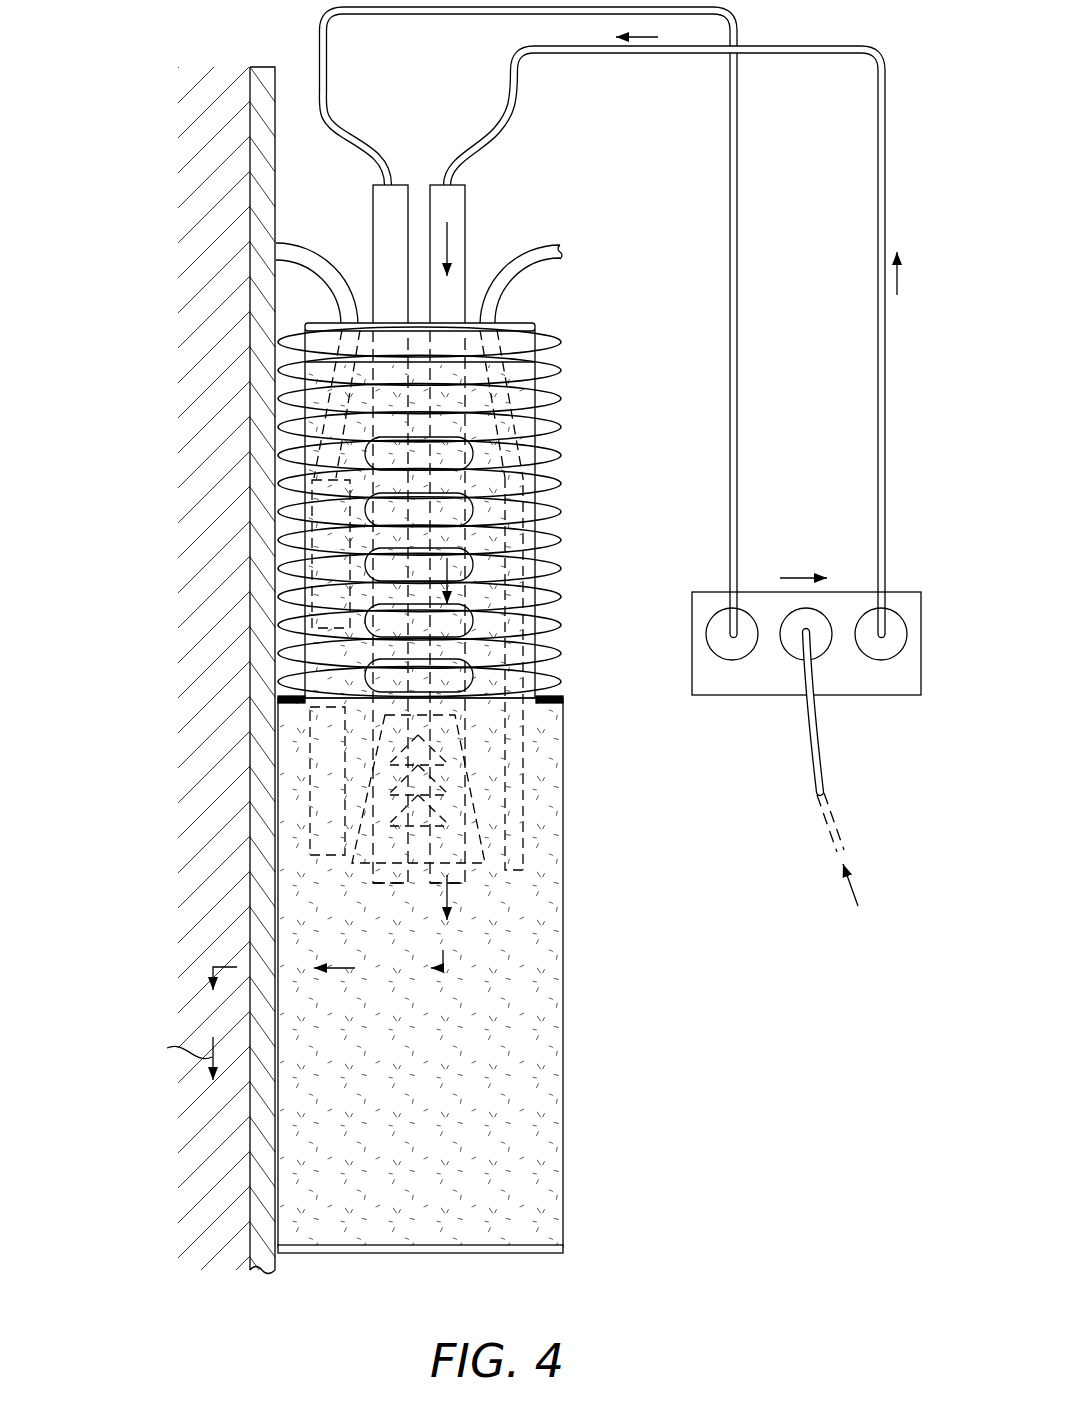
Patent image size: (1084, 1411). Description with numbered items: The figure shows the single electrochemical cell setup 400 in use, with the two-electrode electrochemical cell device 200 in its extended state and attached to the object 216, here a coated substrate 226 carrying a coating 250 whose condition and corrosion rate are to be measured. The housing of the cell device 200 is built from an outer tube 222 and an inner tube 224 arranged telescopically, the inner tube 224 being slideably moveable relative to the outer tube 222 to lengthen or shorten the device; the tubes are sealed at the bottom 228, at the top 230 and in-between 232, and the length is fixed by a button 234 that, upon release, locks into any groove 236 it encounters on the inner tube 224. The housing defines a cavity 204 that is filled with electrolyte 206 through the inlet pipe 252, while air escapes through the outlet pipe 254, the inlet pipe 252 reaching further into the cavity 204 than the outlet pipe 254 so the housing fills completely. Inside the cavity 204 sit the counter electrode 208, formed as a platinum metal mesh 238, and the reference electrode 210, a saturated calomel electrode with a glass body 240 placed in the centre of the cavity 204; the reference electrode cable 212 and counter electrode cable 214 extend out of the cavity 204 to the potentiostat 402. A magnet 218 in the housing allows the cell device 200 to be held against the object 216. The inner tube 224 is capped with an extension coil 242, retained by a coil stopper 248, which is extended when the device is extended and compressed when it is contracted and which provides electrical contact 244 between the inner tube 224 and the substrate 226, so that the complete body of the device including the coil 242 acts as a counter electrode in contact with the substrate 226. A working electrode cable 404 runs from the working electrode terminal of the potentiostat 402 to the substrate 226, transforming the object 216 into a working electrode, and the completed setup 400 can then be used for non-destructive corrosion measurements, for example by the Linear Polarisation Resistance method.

The two-electrode electrochemical cell device 200 is at (560, 166).
The cavity 204 is at (418, 325).
The electrolyte 206 is at (541, 964).
The counter electrode 208 is at (395, 185).
The reference electrode 210 is at (467, 197).
The reference electrode cell device cable 212 is at (520, 104).
The counter electrode cell device cable 214 is at (332, 102).
The object 216 is at (210, 1283).
The magnet 218 is at (305, 540).
The outer tube 222 is at (563, 1040).
The inner tube 224 is at (562, 382).
The coated substrate 226 is at (205, 263).
The bottom 228 is at (535, 1255).
The top 230 is at (532, 323).
The in-between 232 is at (563, 695).
The button 234 is at (540, 833).
The groove 236 is at (562, 427).
The metal mesh 238 is at (388, 886).
The glass body 240 is at (465, 884).
The extension coil 242 is at (562, 477).
The electrical contact 244 is at (300, 424).
The coil stopper 248 is at (565, 342).
The coating 250 is at (262, 170).
The inlet pipe 252 is at (562, 246).
The outlet pipe 254 is at (290, 243).
The single electrochemical cell setup 400 is at (600, 1238).
The potentiostat 402 is at (890, 696).
The working electrode cable 404 is at (818, 755).